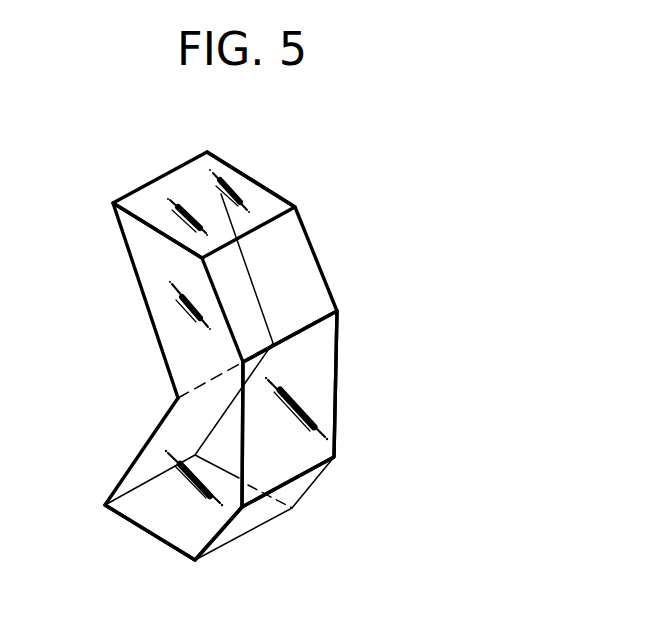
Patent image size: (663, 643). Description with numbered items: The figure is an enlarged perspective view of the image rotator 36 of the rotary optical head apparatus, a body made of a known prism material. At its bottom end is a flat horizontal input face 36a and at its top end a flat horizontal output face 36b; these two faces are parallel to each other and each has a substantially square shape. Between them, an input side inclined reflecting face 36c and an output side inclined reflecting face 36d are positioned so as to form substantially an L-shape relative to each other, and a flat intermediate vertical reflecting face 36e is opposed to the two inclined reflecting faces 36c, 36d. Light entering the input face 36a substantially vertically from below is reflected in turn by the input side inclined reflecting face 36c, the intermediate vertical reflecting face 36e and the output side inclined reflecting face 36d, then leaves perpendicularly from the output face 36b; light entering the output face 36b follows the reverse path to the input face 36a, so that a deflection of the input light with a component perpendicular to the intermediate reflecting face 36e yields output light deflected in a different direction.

The image rotator 36 is at (390, 293).
The input face 36a is at (184, 533).
The output face 36b is at (248, 192).
The input side inclined reflecting face 36c is at (196, 413).
The output side inclined reflecting face 36d is at (178, 283).
The intermediate vertical reflecting face 36e is at (322, 409).